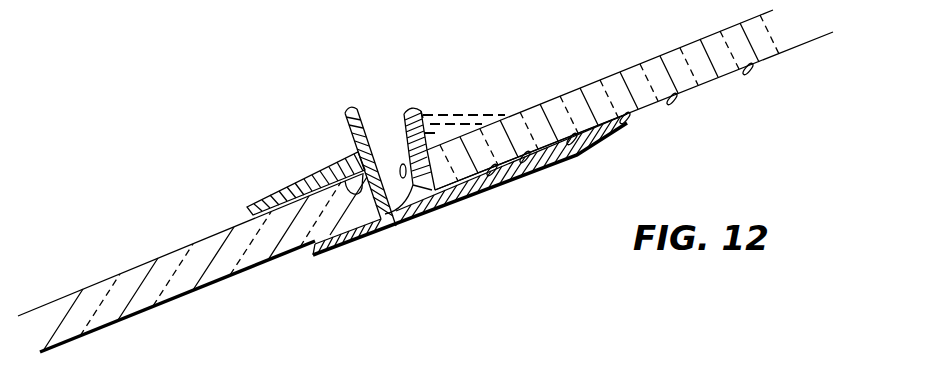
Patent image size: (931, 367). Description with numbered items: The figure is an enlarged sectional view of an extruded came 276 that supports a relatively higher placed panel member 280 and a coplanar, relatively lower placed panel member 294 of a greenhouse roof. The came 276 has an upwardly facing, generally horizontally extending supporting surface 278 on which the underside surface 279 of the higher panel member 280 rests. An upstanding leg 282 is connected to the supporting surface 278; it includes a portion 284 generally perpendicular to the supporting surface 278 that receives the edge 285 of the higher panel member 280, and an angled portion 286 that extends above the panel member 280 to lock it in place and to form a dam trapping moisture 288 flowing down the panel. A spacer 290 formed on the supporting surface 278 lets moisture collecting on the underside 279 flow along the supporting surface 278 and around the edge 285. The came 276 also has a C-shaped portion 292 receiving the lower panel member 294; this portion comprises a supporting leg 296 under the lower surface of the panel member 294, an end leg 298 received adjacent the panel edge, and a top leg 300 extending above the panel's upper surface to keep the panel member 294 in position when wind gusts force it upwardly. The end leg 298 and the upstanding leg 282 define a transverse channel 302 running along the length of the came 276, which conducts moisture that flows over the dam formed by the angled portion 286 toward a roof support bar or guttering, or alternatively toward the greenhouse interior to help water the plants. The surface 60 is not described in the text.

The support surface 60 is at (172, 297).
The came 276 is at (358, 263).
The supporting surface 278 is at (596, 138).
The underside surface 279 is at (716, 80).
The higher panel member 280 is at (664, 53).
The upstanding leg 282 is at (392, 128).
The perpendicular portion 284 is at (401, 180).
The edge 285 is at (399, 208).
The angled portion 286 is at (421, 111).
The moisture 288 is at (452, 103).
The spacer 290 is at (468, 178).
The C-shaped portion 292 is at (331, 286).
The lower panel member 294 is at (125, 275).
The supporting leg 296 is at (303, 178).
The end leg 298 is at (331, 182).
The top leg 300 is at (288, 206).
The transverse channel 302 is at (367, 108).